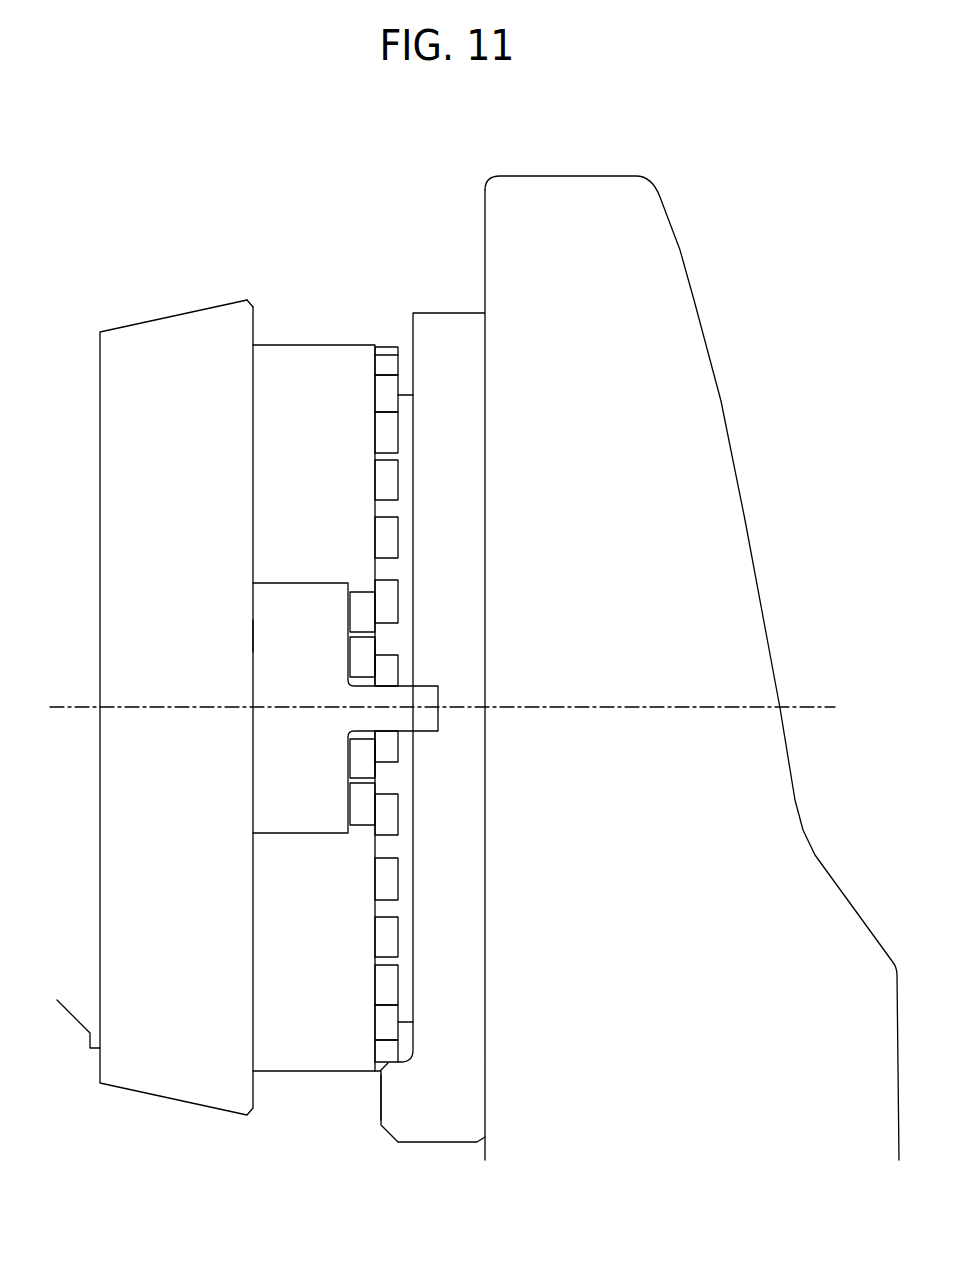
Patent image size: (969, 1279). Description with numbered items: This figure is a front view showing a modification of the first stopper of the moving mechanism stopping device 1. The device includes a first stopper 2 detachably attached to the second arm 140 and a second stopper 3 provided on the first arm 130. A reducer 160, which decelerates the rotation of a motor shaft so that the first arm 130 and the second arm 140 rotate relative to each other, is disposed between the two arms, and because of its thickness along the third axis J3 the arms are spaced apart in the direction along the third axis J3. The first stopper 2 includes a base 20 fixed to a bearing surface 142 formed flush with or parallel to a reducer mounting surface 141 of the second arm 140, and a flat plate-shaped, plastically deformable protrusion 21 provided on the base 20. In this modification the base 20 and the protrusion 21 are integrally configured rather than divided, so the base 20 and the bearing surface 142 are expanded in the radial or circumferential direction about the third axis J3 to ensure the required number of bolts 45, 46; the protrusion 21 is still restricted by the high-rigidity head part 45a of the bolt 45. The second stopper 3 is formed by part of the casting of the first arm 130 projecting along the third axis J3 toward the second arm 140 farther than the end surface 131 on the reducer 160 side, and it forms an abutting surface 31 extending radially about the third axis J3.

The moving mechanism stopping device 1 is at (522, 420).
The first stopper 2 is at (300, 538).
The second stopper 3 is at (376, 1141).
The base 20 is at (307, 848).
The protrusion 21 is at (440, 695).
The abutting surface 31 is at (381, 1097).
The bolt 45 is at (392, 641).
The head part 45a is at (378, 665).
The bolt 46 is at (392, 596).
The first arm 130 is at (731, 391).
The end surface 131 is at (413, 984).
The second arm 140 is at (164, 304).
The reducer mounting surface 141 is at (253, 325).
The bearing surface 142 is at (242, 636).
The reducer 160 is at (329, 344).
The third axis J3 is at (814, 706).